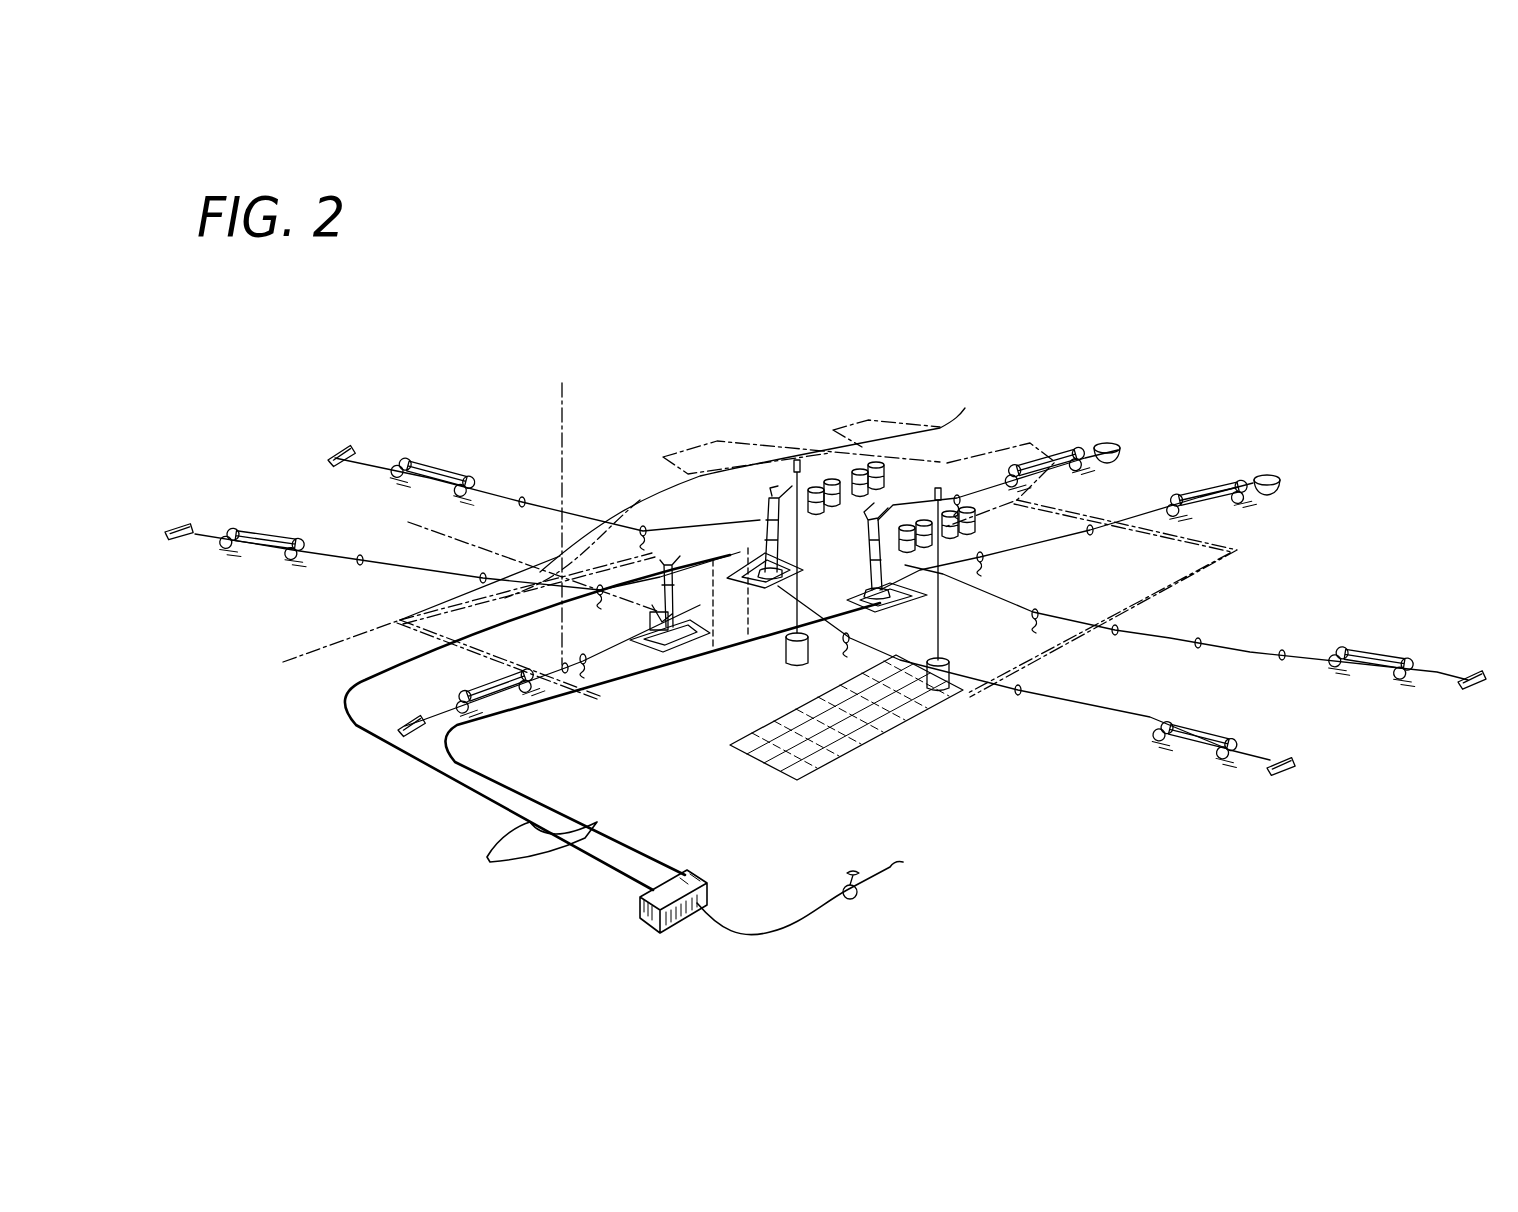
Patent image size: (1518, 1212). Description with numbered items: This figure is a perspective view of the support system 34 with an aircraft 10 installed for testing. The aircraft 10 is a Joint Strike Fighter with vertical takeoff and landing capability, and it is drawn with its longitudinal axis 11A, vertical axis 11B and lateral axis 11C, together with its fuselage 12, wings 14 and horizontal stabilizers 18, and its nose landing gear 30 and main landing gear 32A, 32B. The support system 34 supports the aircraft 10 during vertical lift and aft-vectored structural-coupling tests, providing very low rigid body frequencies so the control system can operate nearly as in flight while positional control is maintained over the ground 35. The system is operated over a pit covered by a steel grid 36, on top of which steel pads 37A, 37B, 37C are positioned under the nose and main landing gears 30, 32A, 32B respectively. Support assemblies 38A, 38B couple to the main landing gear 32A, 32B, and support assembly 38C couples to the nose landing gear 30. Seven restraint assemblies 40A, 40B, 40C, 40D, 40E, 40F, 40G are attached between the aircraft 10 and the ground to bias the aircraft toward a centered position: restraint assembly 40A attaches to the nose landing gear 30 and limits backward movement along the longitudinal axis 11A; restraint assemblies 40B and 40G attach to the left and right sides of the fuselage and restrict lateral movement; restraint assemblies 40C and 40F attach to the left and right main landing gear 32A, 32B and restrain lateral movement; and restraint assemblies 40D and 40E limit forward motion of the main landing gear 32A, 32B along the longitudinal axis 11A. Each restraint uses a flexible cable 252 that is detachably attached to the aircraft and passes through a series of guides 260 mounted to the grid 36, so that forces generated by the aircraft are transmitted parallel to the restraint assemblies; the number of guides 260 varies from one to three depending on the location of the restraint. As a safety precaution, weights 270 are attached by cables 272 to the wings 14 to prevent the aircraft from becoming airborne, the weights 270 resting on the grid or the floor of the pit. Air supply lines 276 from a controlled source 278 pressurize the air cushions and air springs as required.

The aircraft 10 is at (963, 428).
The longitudinal axis 11A is at (320, 647).
The vertical axis 11B is at (563, 403).
The lateral axis 11C is at (435, 530).
The fuselage 12 is at (640, 500).
The wings 14 is at (690, 440).
The horizontal stabilizers 18 is at (848, 428).
The nose landing gear 30 is at (552, 665).
The main landing gear 32A is at (773, 513).
The main landing gear 32B is at (880, 517).
The support system 34 is at (1177, 322).
The ground 35 is at (1146, 905).
The steel grid 36 is at (825, 762).
The steel pad 37A is at (647, 632).
The steel pad 37B is at (763, 585).
The steel pad 37C is at (867, 605).
The support assembly 38A is at (790, 562).
The support assembly 38B is at (870, 600).
The support assembly 38C is at (672, 645).
The restraint assembly 40A is at (430, 723).
The restraint assembly 40B is at (1260, 753).
The restraint assembly 40C is at (1438, 670).
The restraint assembly 40D is at (1250, 483).
The restraint assembly 40E is at (1087, 450).
The restraint assembly 40F is at (368, 455).
The restraint assembly 40G is at (197, 530).
The flexible cable 252 is at (415, 572).
The guides 260 is at (1040, 612).
The weights 270 is at (950, 688).
The cables 272 is at (938, 637).
The air supply lines 276 is at (490, 853).
The controlled source 278 is at (653, 920).